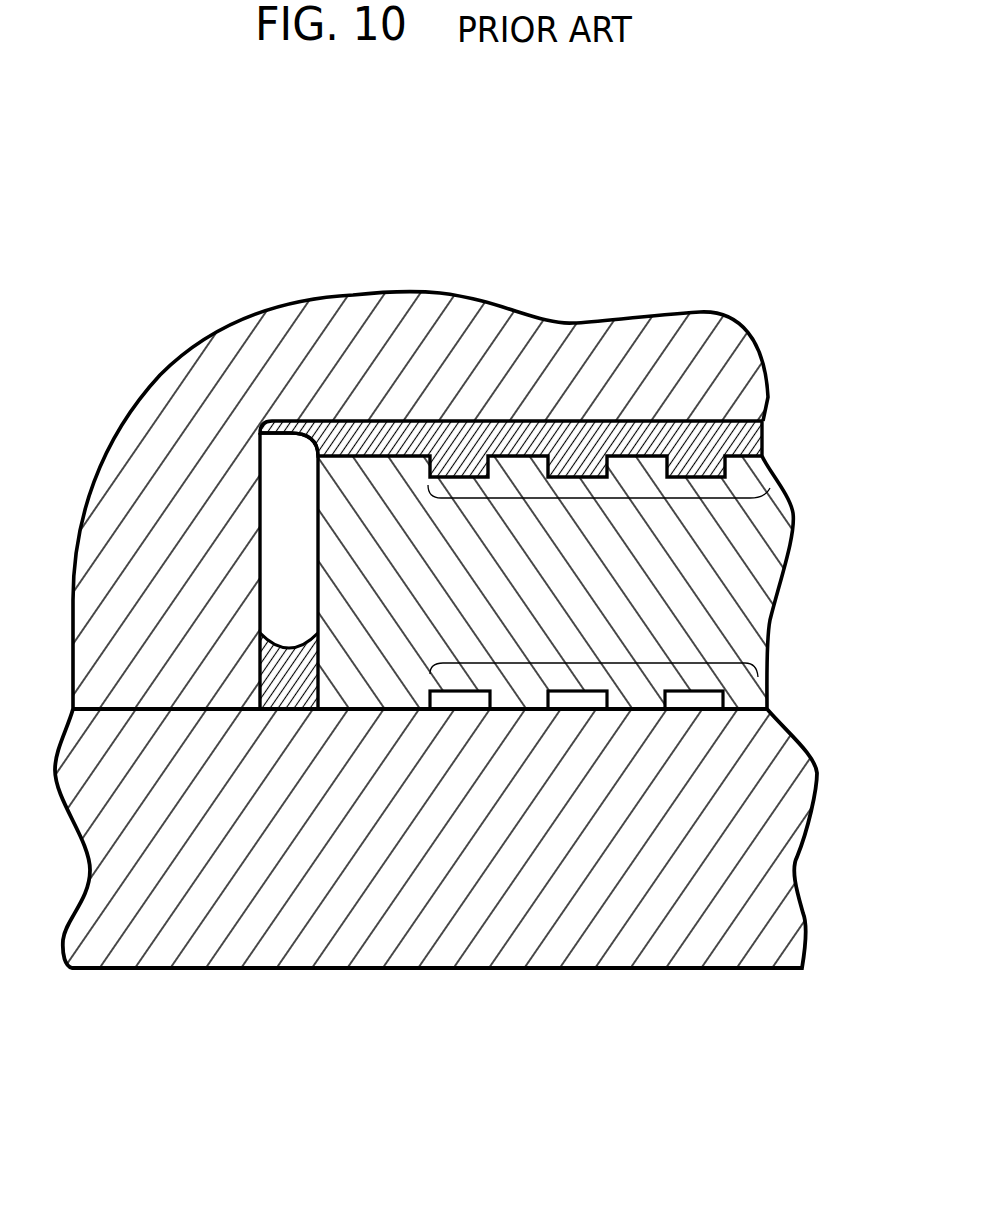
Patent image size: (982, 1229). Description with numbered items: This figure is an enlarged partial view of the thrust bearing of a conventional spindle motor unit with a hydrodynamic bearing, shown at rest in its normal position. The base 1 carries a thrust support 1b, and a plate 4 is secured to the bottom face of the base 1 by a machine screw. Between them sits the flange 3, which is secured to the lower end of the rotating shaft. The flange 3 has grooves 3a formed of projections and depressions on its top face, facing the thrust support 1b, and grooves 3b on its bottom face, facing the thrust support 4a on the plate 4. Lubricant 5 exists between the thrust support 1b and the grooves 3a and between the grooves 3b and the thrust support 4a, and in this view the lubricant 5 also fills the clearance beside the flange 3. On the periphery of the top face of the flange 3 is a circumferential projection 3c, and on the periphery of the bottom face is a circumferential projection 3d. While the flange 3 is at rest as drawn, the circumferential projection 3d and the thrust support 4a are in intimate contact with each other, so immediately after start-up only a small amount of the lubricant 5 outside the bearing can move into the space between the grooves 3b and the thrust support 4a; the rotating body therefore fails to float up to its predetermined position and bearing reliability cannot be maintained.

The base 1 is at (248, 357).
The thrust support 1b is at (388, 420).
The flange 3 is at (497, 545).
The grooves 3a is at (597, 503).
The grooves 3b is at (590, 660).
The circumferential projection 3c is at (318, 430).
The circumferential projection 3d is at (400, 709).
The plate 4 is at (177, 920).
The thrust support 4a is at (343, 709).
The lubricant 5 is at (283, 673).